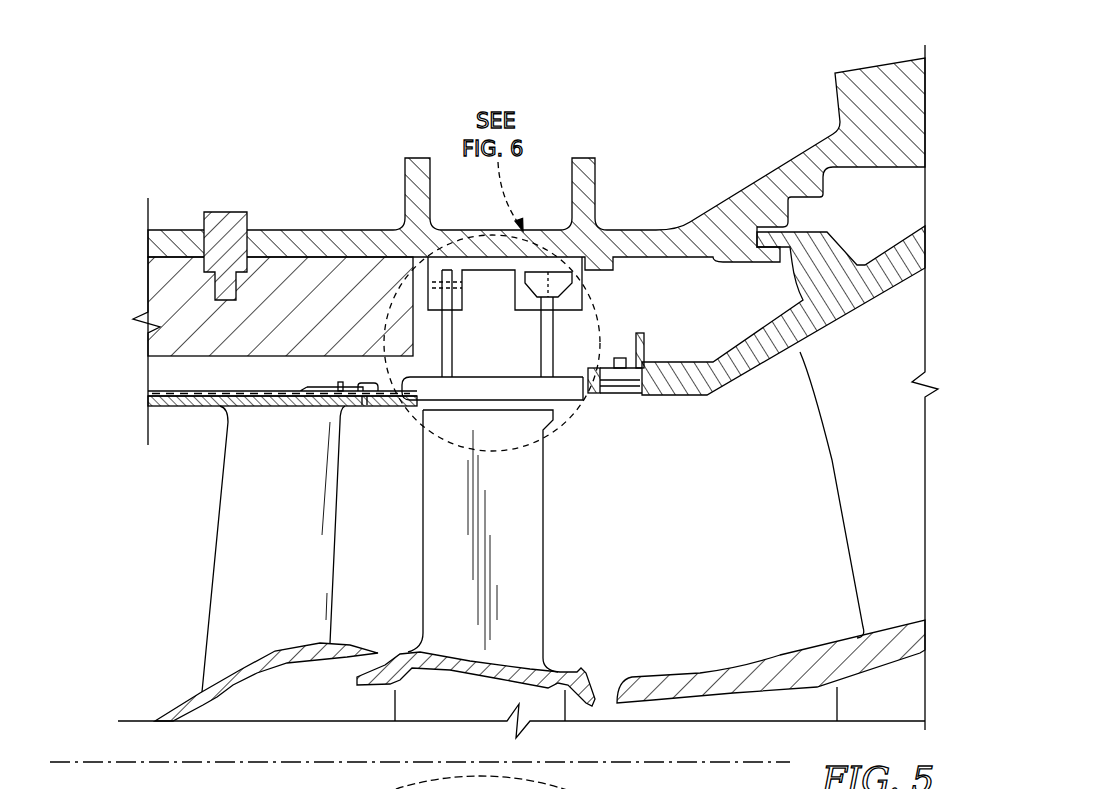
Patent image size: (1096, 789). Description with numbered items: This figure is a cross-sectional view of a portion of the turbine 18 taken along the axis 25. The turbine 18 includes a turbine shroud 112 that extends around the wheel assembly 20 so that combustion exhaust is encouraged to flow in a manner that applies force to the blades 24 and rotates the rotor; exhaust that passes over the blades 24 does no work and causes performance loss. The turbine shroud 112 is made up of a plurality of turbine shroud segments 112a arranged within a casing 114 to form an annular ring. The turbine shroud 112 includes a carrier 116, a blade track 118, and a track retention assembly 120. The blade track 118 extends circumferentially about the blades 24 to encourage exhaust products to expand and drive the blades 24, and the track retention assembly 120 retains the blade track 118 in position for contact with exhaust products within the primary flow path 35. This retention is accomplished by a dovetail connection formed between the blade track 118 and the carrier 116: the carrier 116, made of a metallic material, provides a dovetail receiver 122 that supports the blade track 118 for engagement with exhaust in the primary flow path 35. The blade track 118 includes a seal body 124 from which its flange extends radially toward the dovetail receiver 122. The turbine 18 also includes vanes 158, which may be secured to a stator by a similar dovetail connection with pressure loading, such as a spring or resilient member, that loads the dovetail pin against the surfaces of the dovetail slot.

The turbine 18 is at (745, 68).
The casing 114 is at (676, 232).
The carrier 116 is at (503, 262).
The track retention assembly 120 is at (606, 309).
The dovetail receiver 122 is at (532, 320).
The seal body 124 is at (468, 390).
The blade track 118 is at (590, 413).
The turbine shroud 112 is at (125, 395).
The turbine shroud segments 112a is at (140, 405).
The primary flow path 35 is at (172, 519).
The vanes 158 is at (250, 570).
The blades 24 is at (562, 555).
The wheel assembly 20 is at (613, 640).
The axis 25 is at (95, 762).